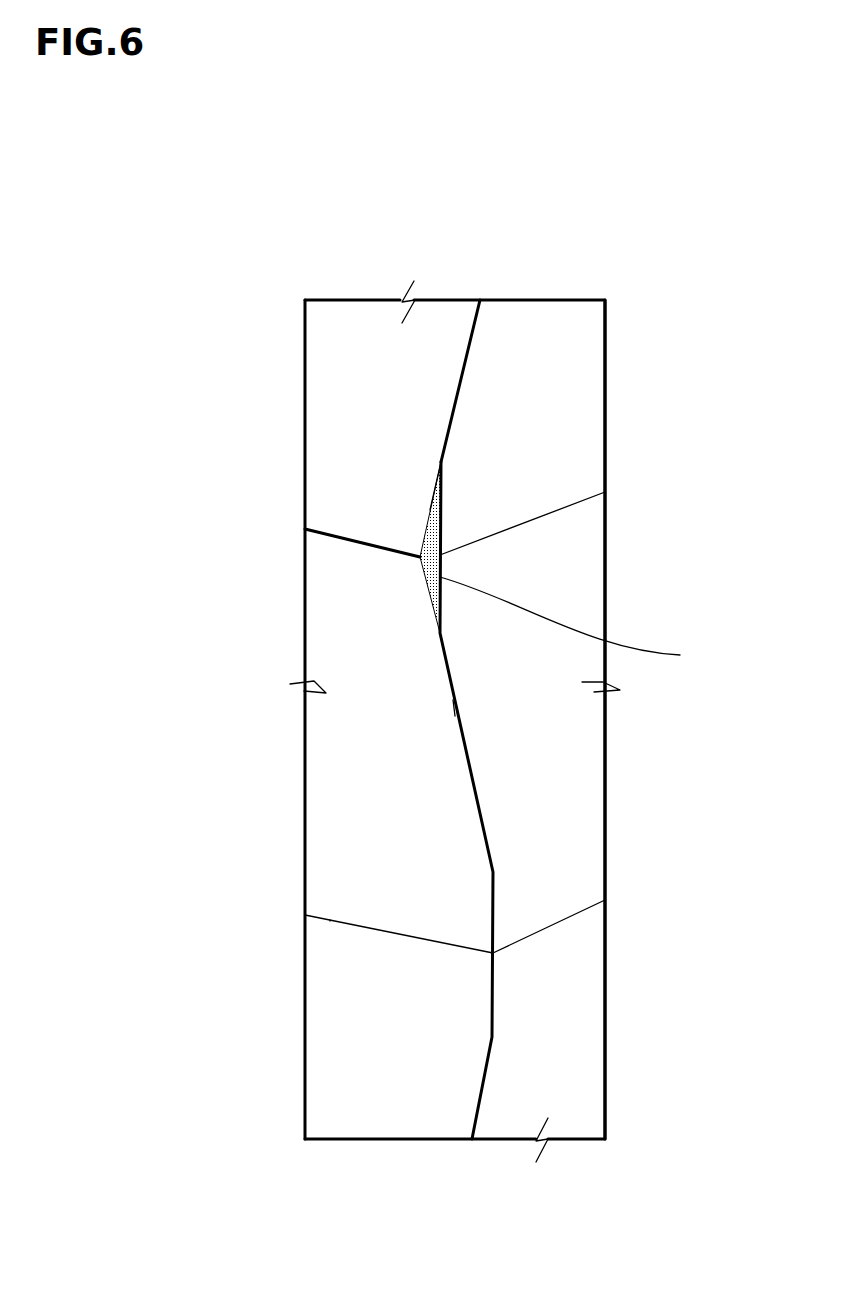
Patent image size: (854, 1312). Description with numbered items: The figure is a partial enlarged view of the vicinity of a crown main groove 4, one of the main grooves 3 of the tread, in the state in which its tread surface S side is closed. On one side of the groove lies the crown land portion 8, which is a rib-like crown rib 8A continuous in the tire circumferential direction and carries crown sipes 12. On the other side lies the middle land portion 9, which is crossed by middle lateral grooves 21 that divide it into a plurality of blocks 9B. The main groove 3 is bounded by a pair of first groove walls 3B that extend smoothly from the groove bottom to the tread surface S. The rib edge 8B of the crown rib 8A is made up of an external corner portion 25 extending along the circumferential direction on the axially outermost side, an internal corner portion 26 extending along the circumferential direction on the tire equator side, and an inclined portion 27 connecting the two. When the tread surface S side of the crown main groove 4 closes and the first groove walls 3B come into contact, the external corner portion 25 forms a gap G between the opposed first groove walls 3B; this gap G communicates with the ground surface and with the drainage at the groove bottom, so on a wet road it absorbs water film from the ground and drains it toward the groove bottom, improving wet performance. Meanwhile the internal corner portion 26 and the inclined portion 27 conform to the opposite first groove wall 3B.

The middle land portion 9 is at (350, 335).
The crown land portion 8 is at (599, 665).
The crown rib 8A is at (540, 335).
The rib edge 8B is at (465, 365).
The main groove 3 is at (594, 800).
The crown main groove 4 is at (467, 750).
The gap G is at (430, 540).
The external corner portion 25 is at (440, 530).
The middle lateral groove 21 is at (345, 533).
The crown sipe 12 is at (540, 517).
The first groove wall 3B is at (425, 570).
The inclined portion 27 is at (453, 708).
The block 9B is at (353, 833).
The internal corner portion 26 is at (493, 927).
The tread surface S is at (367, 985).